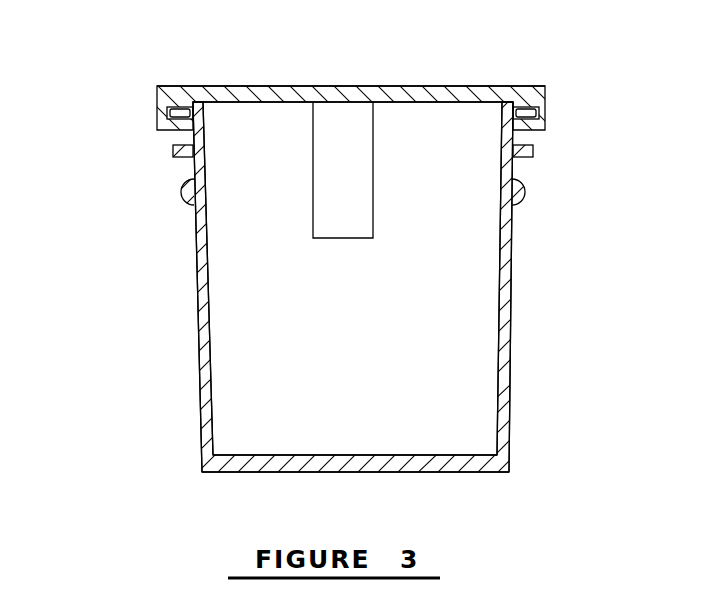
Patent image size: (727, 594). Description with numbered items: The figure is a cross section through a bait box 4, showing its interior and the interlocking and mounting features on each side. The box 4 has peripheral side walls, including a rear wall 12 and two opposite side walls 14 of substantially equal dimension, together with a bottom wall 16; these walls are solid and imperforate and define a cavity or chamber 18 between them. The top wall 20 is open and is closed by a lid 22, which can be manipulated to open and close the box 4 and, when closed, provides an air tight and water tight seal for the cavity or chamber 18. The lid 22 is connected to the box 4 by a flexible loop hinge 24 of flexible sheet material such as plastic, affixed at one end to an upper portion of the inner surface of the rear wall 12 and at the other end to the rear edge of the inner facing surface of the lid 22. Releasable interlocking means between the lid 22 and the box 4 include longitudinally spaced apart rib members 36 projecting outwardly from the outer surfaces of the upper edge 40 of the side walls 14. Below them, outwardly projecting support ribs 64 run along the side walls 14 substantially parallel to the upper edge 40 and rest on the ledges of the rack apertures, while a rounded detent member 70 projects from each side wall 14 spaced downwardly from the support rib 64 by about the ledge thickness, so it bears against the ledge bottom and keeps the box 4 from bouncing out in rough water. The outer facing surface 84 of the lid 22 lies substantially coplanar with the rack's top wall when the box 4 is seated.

The bait box 4 is at (512, 290).
The rear wall 12 is at (452, 368).
The side walls 14 is at (194, 237).
The bottom wall 16 is at (430, 474).
The cavity or chamber 18 is at (323, 440).
The top wall 20 is at (468, 102).
The lid 22 is at (250, 85).
The flexible loop hinge 24 is at (356, 198).
The rib members 36 is at (168, 112).
The upper edge 40 is at (203, 105).
The support ribs 64 is at (173, 152).
The detent member 70 is at (180, 193).
The outer facing surface 84 is at (465, 86).